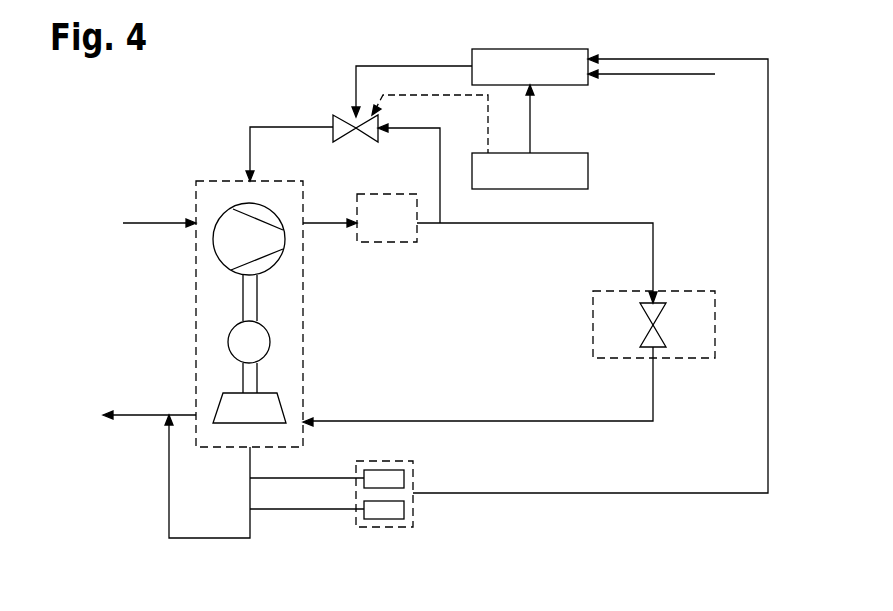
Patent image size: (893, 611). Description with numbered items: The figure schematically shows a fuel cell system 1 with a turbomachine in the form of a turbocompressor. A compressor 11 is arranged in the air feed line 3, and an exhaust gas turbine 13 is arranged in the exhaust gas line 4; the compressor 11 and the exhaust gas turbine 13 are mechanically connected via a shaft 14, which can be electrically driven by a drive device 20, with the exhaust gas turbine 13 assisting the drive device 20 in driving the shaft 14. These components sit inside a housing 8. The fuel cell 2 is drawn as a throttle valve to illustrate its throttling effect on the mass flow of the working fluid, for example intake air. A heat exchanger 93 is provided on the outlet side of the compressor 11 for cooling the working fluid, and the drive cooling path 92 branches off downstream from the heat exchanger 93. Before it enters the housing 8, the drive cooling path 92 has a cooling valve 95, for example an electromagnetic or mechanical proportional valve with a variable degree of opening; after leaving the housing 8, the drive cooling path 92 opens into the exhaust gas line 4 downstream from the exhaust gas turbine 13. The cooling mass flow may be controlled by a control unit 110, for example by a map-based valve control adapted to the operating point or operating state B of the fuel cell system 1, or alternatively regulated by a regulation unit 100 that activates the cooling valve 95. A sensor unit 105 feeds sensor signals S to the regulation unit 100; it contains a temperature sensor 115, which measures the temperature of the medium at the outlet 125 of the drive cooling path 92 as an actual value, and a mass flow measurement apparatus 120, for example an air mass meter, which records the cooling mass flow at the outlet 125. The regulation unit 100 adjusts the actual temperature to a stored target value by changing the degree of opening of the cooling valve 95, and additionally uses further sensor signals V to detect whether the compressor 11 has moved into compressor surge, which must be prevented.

The fuel cell system 1 is at (158, 132).
The fuel cell 2 is at (693, 291).
The air feed line 3 is at (141, 222).
The exhaust gas line 4 is at (142, 413).
The housing 8 is at (196, 268).
The compressor 11 is at (222, 212).
The exhaust gas turbine 13 is at (286, 405).
The shaft 14 is at (257, 303).
The drive device 20 is at (268, 346).
The drive cooling path 92 is at (286, 117).
The heat exchanger 93 is at (410, 242).
The cooling valve 95 is at (346, 115).
The regulation unit 100 is at (572, 86).
The sensor unit 105 is at (393, 461).
The control unit 110 is at (588, 167).
The temperature sensor 115 is at (404, 478).
The mass flow measurement apparatus 120 is at (404, 509).
The outlet 125 is at (166, 426).
The operating state B is at (530, 122).
The sensor signals V is at (695, 74).
The sensor signals S is at (740, 59).